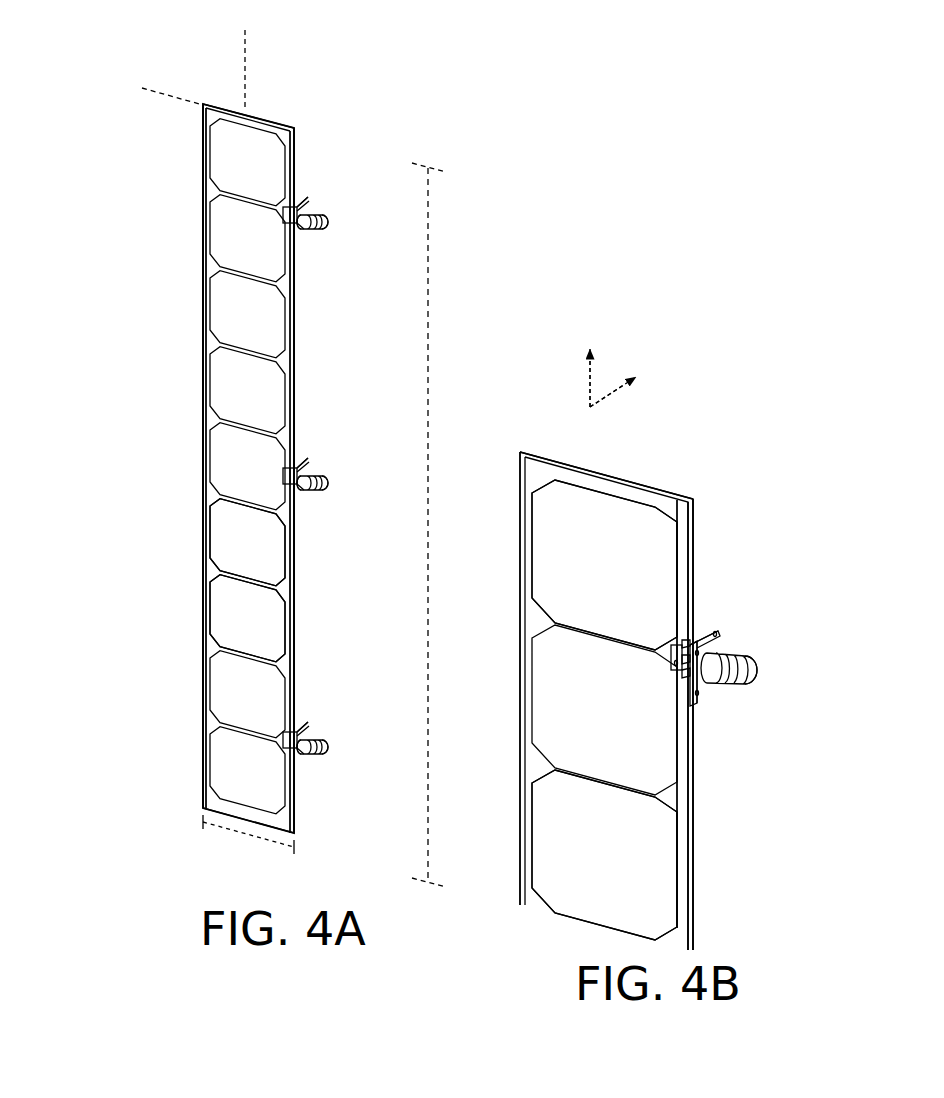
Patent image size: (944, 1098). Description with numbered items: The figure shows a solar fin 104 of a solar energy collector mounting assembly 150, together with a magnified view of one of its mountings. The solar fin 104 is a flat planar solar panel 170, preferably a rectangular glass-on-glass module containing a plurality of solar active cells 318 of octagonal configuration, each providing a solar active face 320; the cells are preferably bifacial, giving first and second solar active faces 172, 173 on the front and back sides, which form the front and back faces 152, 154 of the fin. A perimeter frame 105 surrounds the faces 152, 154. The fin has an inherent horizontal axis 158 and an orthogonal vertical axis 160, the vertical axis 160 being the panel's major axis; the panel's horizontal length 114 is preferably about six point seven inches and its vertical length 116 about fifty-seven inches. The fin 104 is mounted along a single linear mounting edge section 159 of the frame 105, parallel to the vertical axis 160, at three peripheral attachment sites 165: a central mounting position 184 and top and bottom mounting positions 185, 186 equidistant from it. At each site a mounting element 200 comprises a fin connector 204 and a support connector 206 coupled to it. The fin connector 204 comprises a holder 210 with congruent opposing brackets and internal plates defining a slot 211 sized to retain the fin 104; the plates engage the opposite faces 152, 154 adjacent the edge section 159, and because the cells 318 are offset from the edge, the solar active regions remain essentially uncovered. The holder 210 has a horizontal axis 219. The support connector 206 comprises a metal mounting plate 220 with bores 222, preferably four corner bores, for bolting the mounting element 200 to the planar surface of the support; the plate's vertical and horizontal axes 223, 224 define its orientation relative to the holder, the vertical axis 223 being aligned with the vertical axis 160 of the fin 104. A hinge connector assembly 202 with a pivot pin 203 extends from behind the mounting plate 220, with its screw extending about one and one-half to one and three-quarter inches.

In FIG. 4A, the solar fin 104 is at (203, 492).
In FIG. 4B, the solar fin 104 is at (686, 352).
In FIG. 4A, the perimeter frame 105 is at (158, 124).
In FIG. 4B, the perimeter frame 105 is at (690, 817).
In FIG. 4A, the horizontal length 114 is at (240, 836).
In FIG. 4A, the vertical length 116 is at (424, 363).
In FIG. 4A, the solar energy collector mounting assembly 150 is at (397, 112).
In FIG. 4B, the solar energy collector mounting assembly 150 is at (663, 322).
In FIG. 4B, the first face 152 is at (662, 878).
In FIG. 4B, the second face 154 is at (692, 865).
In FIG. 4A, the first planar axis 158 is at (177, 95).
In FIG. 4B, the edge section 159 is at (698, 752).
In FIG. 4A, the second planar axis 160 is at (252, 62).
In FIG. 4A, the peripheral attachment site 165 is at (299, 203).
In FIG. 4B, the peripheral attachment site 165 is at (703, 623).
In FIG. 4A, the solar panel 170 is at (203, 474).
In FIG. 4B, the solar panel 170 is at (676, 510).
In FIG. 4A, the first solar active face 172 is at (235, 567).
In FIG. 4B, the first solar active face 172 is at (690, 840).
In FIG. 4A, the second solar active face 173 is at (202, 650).
In FIG. 4B, the second solar active face 173 is at (697, 521).
In FIG. 4A, the central mounting position 184 is at (318, 468).
In FIG. 4A, the top mounting position 185 is at (318, 207).
In FIG. 4A, the bottom mounting position 186 is at (318, 732).
In FIG. 4A, the mounting element 200 is at (330, 221).
In FIG. 4B, the mounting element 200 is at (759, 661).
In FIG. 4A, the hinge connector assembly 202 is at (313, 232).
In FIG. 4B, the hinge connector assembly 202 is at (722, 684).
In FIG. 4B, the pivot pin 203 is at (668, 662).
In FIG. 4A, the fin connector 204 is at (285, 205).
In FIG. 4B, the fin connector 204 is at (668, 648).
In FIG. 4A, the support connector 206 is at (310, 197).
In FIG. 4B, the support connector 206 is at (713, 625).
In FIG. 4B, the holder 210 is at (670, 675).
In FIG. 4B, the slot 211 is at (668, 636).
In FIG. 4B, the horizontal axis 219 is at (597, 414).
In FIG. 4A, the mounting plate 220 is at (302, 233).
In FIG. 4B, the bores 222 is at (714, 612).
In FIG. 4B, the vertical axis 223 is at (585, 378).
In FIG. 4B, the horizontal axis 224 is at (607, 395).
In FIG. 4A, the solar active cell 318 is at (205, 150).
In FIG. 4B, the solar active cell 318 is at (545, 506).
In FIG. 4A, the solar active face 320 is at (242, 525).
In FIG. 4B, the solar active face 320 is at (558, 550).